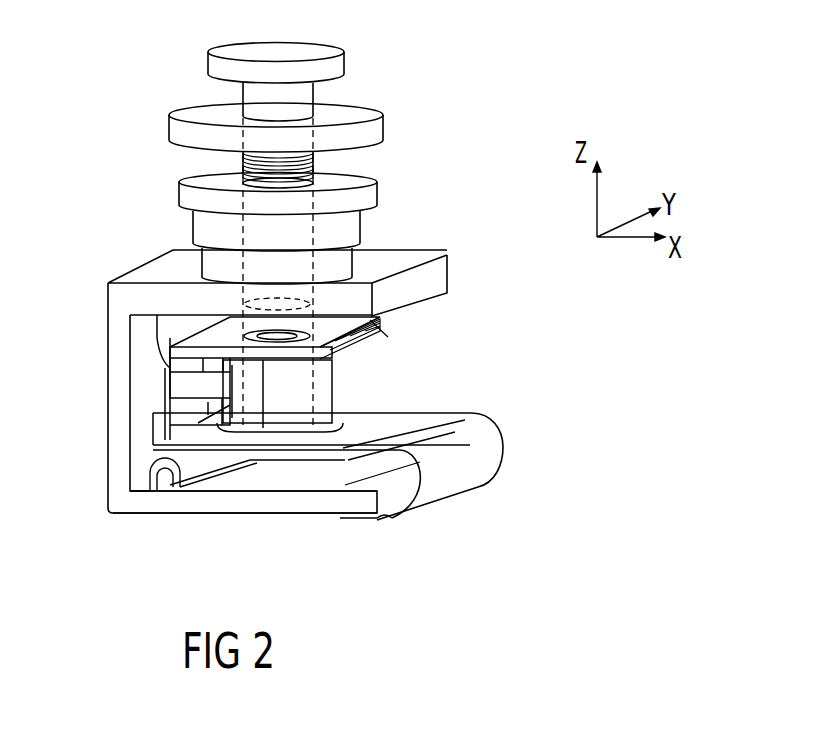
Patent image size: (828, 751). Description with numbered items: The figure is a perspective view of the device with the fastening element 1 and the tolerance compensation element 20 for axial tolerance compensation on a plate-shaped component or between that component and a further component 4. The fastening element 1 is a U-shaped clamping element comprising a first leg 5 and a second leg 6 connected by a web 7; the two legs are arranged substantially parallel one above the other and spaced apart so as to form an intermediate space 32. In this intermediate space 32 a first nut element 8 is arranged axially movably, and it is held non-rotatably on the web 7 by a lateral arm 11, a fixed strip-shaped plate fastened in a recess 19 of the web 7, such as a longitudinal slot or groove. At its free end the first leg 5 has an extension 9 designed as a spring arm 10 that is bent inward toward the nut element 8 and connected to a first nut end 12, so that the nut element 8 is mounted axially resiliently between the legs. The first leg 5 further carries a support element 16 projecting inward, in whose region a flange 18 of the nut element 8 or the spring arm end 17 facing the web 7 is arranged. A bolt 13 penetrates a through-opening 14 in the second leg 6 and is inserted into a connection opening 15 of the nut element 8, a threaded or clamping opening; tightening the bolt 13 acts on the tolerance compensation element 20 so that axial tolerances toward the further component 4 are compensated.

The fastening element 1 is at (120, 239).
The further component 4 is at (357, 123).
The first leg 5 is at (302, 495).
The second leg 6 is at (410, 262).
The web 7 is at (120, 467).
The first nut element 8 is at (332, 373).
The extension 9 is at (356, 508).
The spring arm 10 is at (474, 444).
The lateral arm 11 is at (180, 385).
The first nut end 12 is at (345, 425).
The bolt 13 is at (212, 63).
The through-opening 14 is at (253, 292).
The connection opening 15 is at (292, 338).
The support element 16 is at (158, 493).
The spring arm end 17 is at (160, 445).
The flange 18 is at (190, 452).
The recess 19 is at (163, 413).
The tolerance compensation element 20 is at (363, 200).
The intermediate space 32 is at (428, 348).